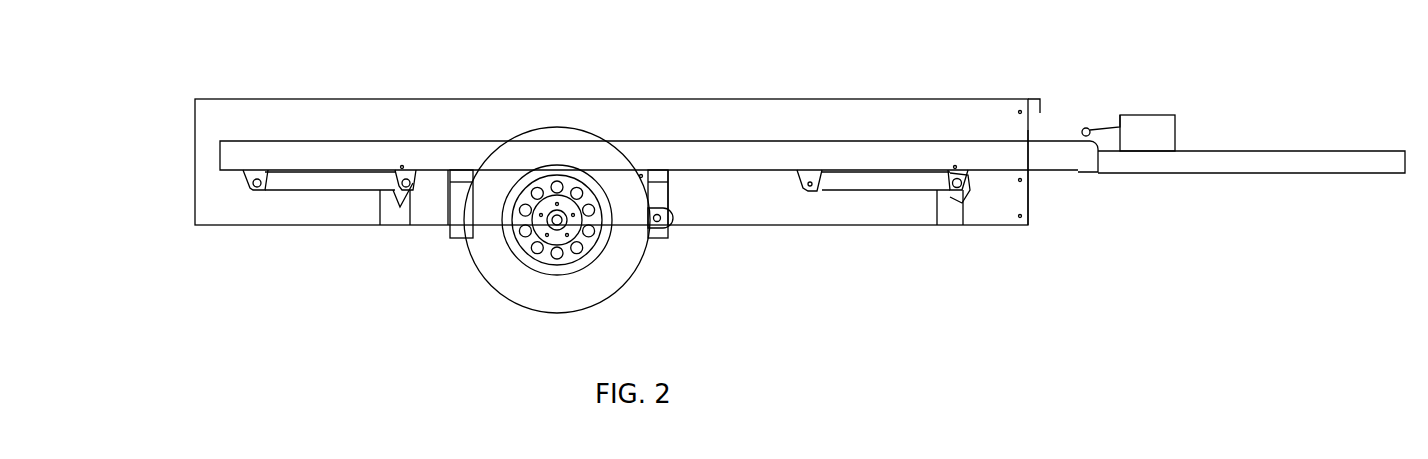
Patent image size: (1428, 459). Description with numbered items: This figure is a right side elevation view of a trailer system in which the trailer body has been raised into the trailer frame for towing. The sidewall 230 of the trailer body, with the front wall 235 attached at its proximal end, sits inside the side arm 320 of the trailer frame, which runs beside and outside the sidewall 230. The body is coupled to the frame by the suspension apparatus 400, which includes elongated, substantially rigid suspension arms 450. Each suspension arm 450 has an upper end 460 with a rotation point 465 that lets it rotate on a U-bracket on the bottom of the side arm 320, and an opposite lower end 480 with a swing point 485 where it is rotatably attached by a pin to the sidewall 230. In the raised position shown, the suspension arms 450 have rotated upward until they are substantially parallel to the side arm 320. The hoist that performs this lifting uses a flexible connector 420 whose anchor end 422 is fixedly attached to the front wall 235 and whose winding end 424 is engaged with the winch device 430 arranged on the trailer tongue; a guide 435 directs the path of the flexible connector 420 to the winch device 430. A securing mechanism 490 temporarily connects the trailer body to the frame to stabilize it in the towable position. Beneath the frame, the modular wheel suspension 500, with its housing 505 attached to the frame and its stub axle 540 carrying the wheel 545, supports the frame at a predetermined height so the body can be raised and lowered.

The sidewall 230 is at (611, 138).
The front wall 235 is at (1029, 89).
The side arm 320 is at (649, 139).
The suspension apparatus 400 is at (1237, 127).
The flexible connector 420 is at (1028, 208).
The anchor end 422 is at (1030, 208).
The winding end 424 is at (1153, 163).
The winch device 430 is at (1176, 116).
The guide 435 is at (1088, 129).
The suspension arm 450 is at (586, 225).
The upper end 460 is at (779, 219).
The rotation point 465 is at (802, 188).
The lower end 480 is at (998, 227).
The swing point 485 is at (934, 225).
The securing mechanism 490 is at (465, 120).
The modular wheel suspension 500 is at (594, 245).
The housing 505 is at (498, 236).
The stub axle 540 is at (490, 272).
The wheel 545 is at (557, 245).